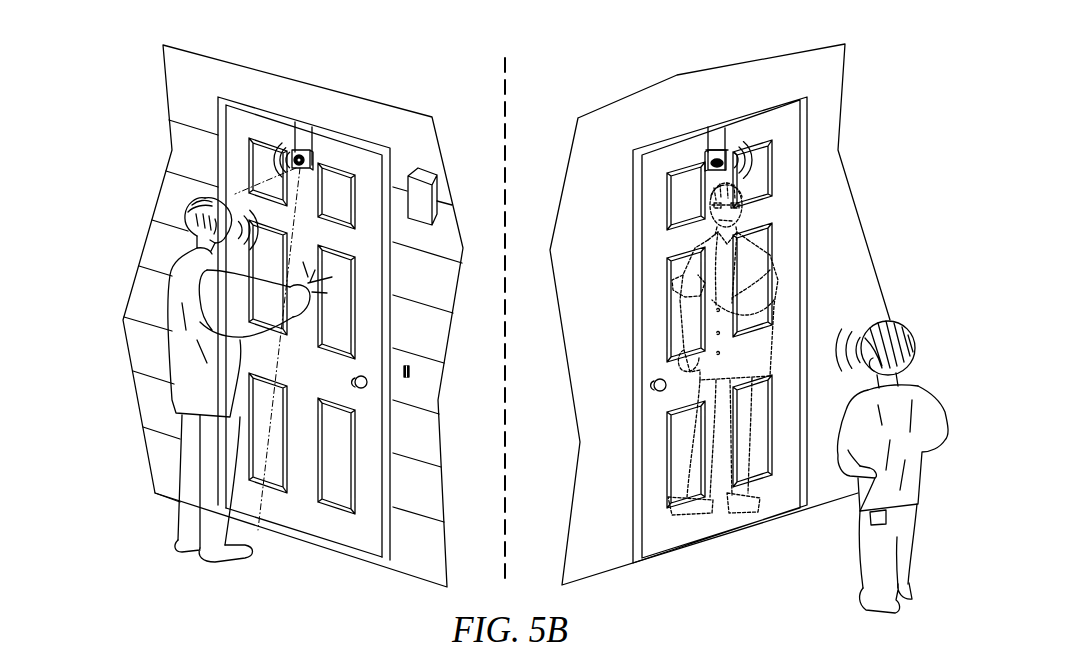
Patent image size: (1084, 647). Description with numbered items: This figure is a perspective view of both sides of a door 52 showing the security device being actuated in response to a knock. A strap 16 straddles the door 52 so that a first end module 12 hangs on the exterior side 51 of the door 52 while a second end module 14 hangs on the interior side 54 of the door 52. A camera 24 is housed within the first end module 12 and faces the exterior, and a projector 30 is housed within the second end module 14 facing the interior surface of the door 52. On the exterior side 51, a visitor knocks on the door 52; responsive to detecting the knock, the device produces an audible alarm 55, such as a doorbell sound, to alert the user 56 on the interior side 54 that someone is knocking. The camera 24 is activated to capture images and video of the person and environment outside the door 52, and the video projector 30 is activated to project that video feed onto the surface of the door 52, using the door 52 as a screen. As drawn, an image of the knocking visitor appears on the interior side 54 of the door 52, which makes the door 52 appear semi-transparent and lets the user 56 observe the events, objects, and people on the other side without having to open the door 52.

The first end module 12 is at (308, 279).
The second end module 14 is at (712, 164).
The strap 16 is at (313, 143).
The camera 24 is at (314, 161).
The projector 30 is at (740, 167).
The exterior side 51 is at (375, 323).
The door 52 is at (230, 101).
The interior side 54 is at (650, 333).
The audible alarm 55 is at (735, 148).
The user 56 is at (913, 333).